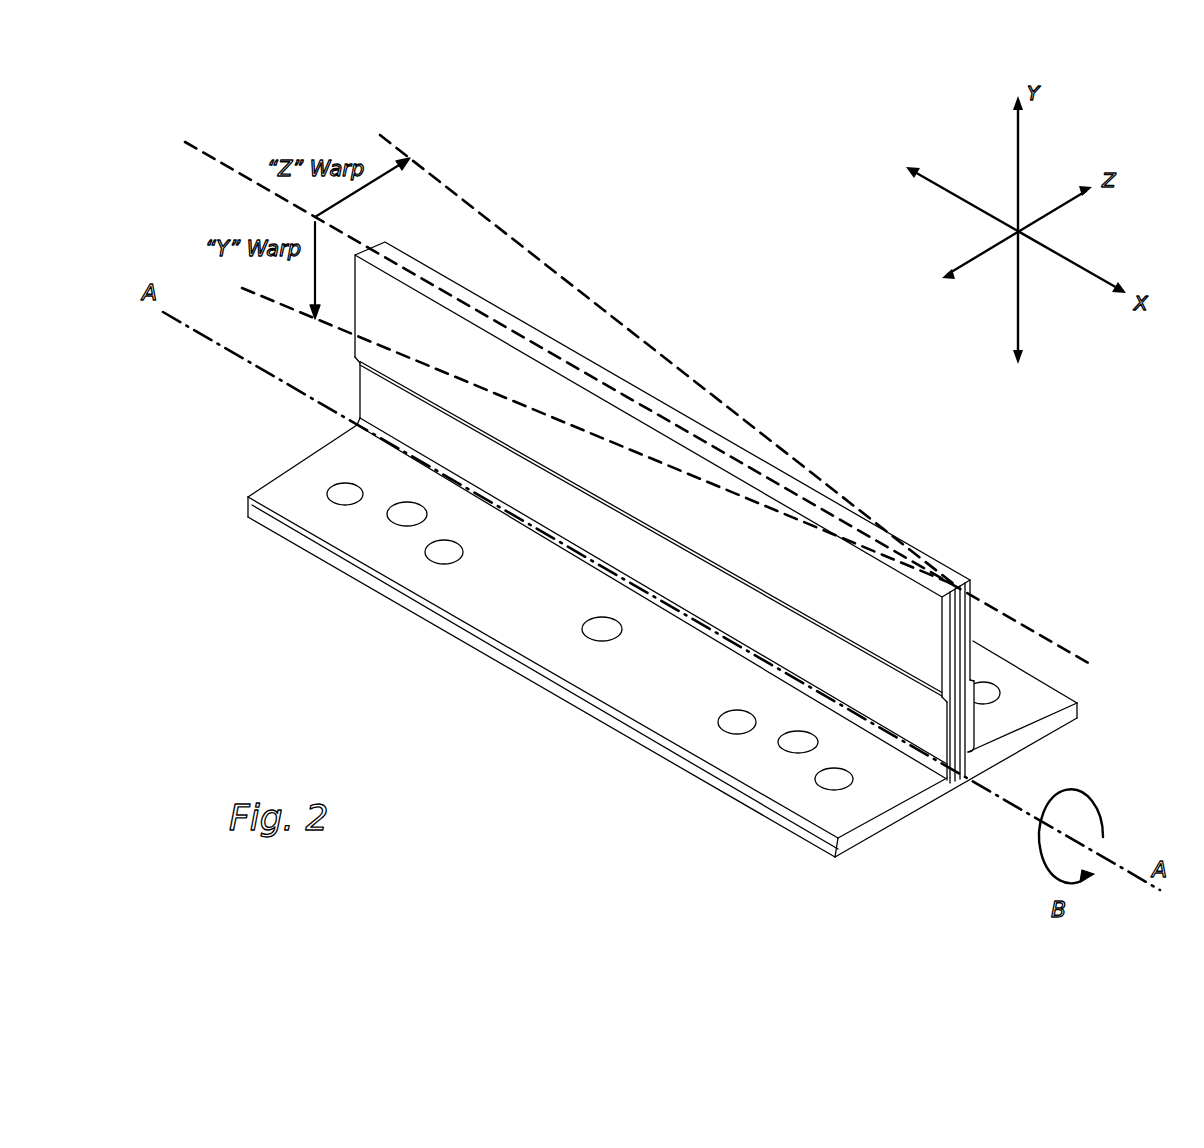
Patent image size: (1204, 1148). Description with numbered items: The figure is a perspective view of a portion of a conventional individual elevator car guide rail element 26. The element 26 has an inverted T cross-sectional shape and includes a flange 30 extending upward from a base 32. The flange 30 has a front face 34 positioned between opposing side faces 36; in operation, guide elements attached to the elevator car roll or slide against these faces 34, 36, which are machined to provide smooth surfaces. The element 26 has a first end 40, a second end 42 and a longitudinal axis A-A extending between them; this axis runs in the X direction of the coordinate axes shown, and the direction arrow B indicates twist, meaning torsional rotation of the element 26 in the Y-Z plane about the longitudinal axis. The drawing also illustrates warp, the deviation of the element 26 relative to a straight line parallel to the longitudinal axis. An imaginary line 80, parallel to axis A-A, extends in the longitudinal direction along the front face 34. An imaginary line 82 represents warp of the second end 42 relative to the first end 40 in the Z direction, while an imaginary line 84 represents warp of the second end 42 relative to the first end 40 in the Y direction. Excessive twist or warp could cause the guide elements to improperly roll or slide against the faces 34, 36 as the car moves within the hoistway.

The car guide rail element 26 is at (676, 532).
The flange 30 is at (692, 535).
The base 32 is at (869, 837).
The front face 34 is at (451, 275).
The side faces 36 is at (881, 617).
The first end 40 is at (1053, 731).
The second end 42 is at (303, 460).
The imaginary line 80 is at (657, 416).
The imaginary line 82 is at (651, 346).
The imaginary line 84 is at (580, 431).